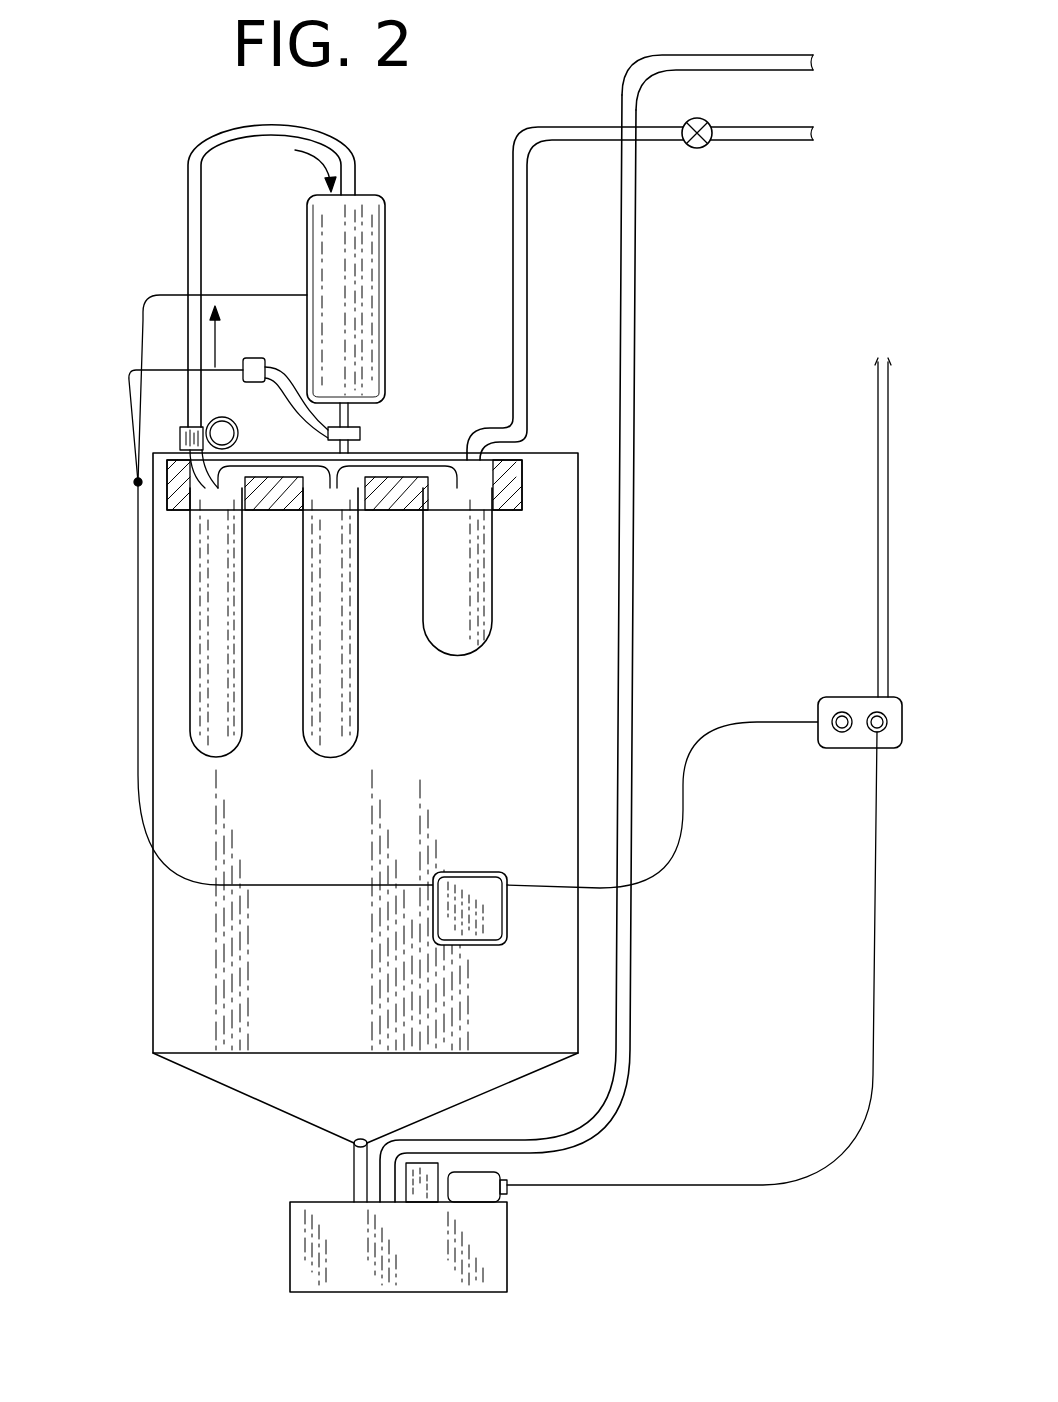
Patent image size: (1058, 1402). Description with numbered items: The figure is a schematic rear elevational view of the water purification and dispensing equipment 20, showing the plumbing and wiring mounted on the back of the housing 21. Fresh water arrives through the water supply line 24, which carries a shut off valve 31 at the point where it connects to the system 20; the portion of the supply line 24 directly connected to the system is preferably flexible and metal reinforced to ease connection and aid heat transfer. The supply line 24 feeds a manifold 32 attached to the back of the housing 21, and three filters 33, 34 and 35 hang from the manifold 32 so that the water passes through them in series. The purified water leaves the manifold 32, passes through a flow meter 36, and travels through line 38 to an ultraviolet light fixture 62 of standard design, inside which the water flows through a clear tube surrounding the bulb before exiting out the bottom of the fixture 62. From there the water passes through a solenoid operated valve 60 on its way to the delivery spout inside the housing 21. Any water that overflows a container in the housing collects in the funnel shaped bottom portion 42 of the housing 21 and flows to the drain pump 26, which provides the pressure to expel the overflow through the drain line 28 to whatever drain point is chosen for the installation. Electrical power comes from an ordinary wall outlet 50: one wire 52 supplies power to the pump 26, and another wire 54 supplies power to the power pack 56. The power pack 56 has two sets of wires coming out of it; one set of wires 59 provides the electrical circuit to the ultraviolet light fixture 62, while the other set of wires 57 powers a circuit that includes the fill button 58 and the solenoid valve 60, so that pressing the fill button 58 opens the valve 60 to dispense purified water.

The water purification and dispensing equipment 20 is at (684, 486).
The housing 21 is at (180, 950).
The water supply line 24 is at (770, 142).
The drain pump 26 is at (310, 1270).
The drain line 28 is at (636, 365).
The shut off valve 31 is at (700, 149).
The manifold 32 is at (508, 487).
The filter 33 is at (478, 587).
The filter 34 is at (322, 708).
The filter 35 is at (232, 625).
The flow meter 36 is at (252, 440).
The line 38 is at (198, 148).
The funnel shaped bottom portion 42 is at (262, 1102).
The wall outlet 50 is at (893, 712).
The wire 52 is at (876, 810).
The wire 54 is at (662, 866).
The power pack 56 is at (498, 907).
The set of wires 57 is at (163, 370).
The fill button 58 is at (253, 358).
The set of wires 59 is at (150, 292).
The solenoid operated valve 60 is at (362, 436).
The ultraviolet light fixture 62 is at (370, 293).